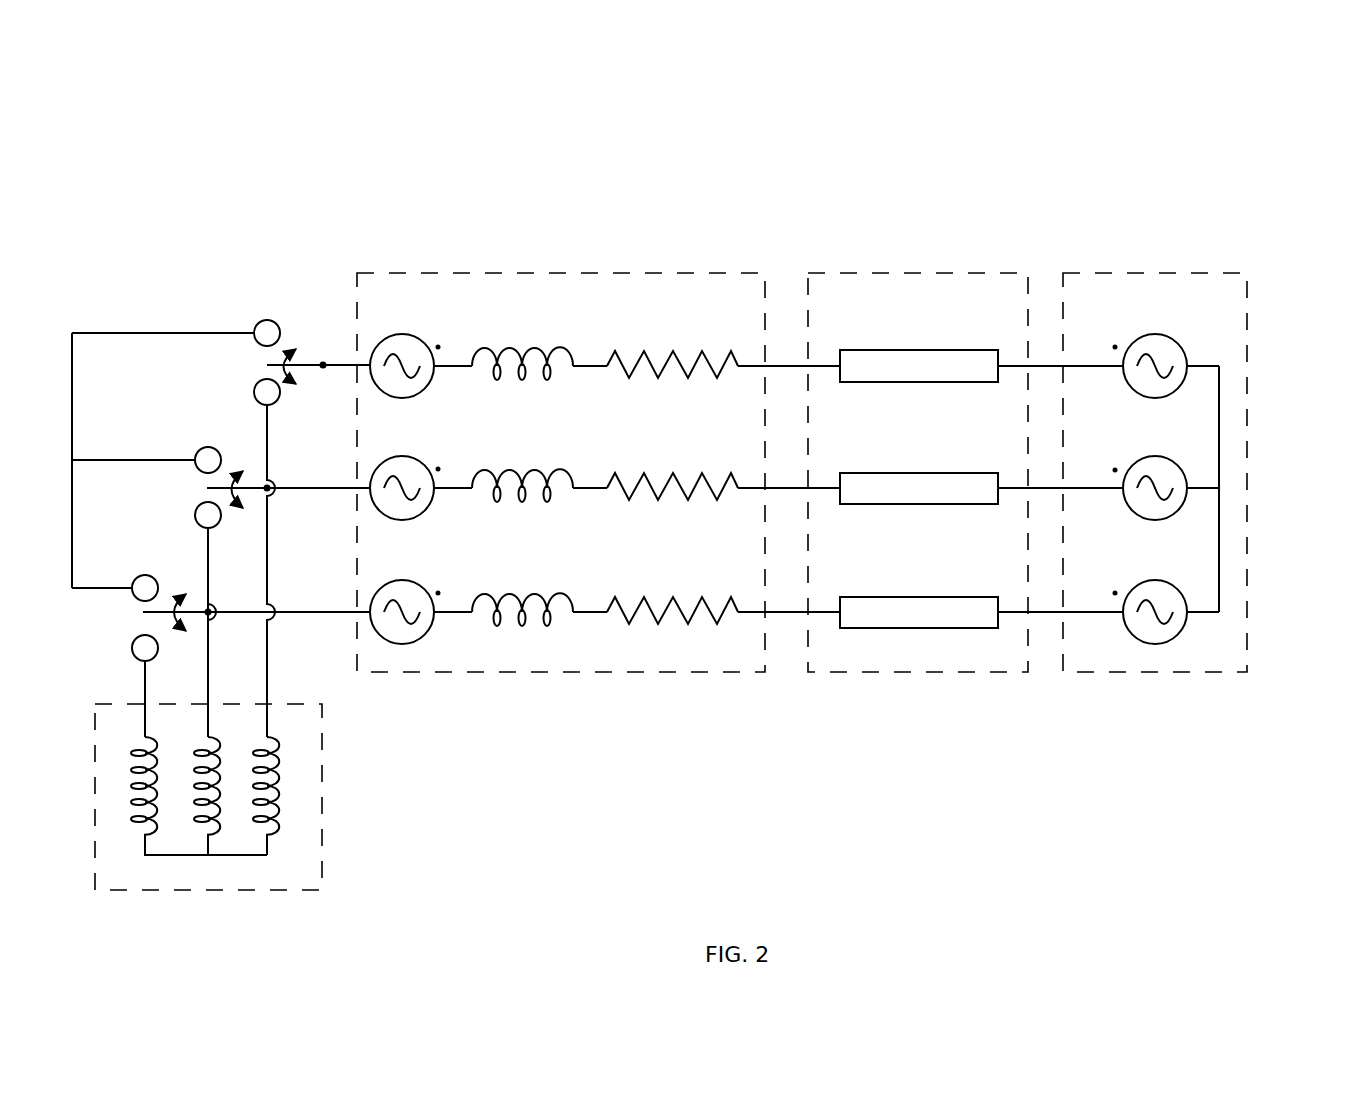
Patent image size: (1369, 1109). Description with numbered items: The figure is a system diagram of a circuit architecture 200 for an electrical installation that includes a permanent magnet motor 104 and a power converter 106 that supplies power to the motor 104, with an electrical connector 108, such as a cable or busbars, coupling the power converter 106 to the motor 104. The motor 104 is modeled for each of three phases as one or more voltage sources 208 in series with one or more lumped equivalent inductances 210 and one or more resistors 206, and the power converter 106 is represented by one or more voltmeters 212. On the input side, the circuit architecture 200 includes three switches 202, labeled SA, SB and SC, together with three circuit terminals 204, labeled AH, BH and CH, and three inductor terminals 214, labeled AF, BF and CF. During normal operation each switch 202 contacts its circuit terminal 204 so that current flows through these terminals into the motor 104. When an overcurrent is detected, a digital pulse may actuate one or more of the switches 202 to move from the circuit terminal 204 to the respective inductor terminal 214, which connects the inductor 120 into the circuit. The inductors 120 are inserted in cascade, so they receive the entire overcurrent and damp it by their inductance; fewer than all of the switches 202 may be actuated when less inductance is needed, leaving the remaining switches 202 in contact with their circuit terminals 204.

The circuit architecture 200 is at (1246, 138).
The permanent magnet motor 104 is at (580, 273).
The electrical connector 108 is at (918, 273).
The power converter 106 is at (1135, 273).
The inductor 120 is at (322, 781).
The terminals 204 is at (256, 325).
The inductor terminals 214 is at (254, 389).
The switches 202 is at (307, 367).
The voltage sources 208 is at (428, 342).
The lumped equivalent inductances 210 is at (555, 350).
The resistors 206 is at (712, 362).
The voltmeters 212 is at (1186, 341).